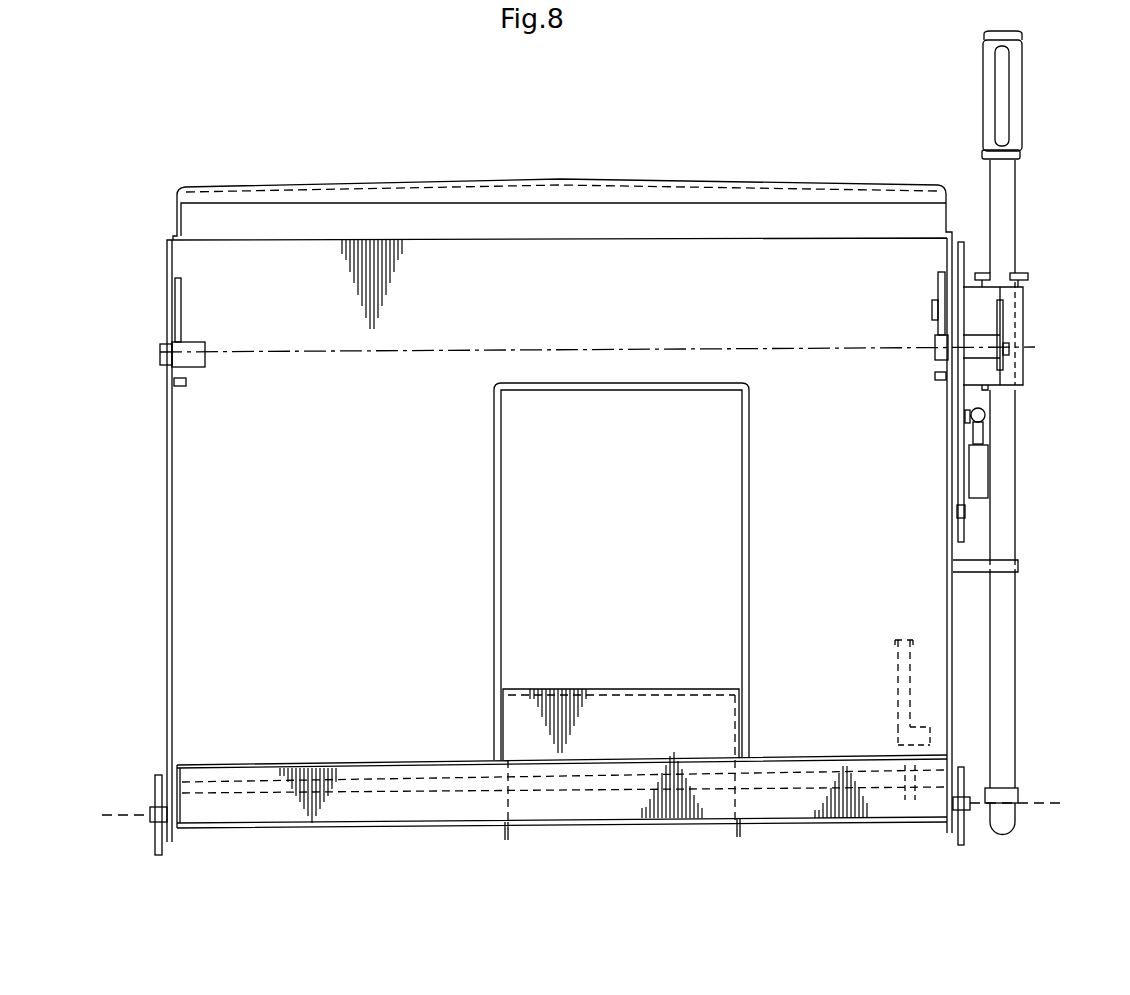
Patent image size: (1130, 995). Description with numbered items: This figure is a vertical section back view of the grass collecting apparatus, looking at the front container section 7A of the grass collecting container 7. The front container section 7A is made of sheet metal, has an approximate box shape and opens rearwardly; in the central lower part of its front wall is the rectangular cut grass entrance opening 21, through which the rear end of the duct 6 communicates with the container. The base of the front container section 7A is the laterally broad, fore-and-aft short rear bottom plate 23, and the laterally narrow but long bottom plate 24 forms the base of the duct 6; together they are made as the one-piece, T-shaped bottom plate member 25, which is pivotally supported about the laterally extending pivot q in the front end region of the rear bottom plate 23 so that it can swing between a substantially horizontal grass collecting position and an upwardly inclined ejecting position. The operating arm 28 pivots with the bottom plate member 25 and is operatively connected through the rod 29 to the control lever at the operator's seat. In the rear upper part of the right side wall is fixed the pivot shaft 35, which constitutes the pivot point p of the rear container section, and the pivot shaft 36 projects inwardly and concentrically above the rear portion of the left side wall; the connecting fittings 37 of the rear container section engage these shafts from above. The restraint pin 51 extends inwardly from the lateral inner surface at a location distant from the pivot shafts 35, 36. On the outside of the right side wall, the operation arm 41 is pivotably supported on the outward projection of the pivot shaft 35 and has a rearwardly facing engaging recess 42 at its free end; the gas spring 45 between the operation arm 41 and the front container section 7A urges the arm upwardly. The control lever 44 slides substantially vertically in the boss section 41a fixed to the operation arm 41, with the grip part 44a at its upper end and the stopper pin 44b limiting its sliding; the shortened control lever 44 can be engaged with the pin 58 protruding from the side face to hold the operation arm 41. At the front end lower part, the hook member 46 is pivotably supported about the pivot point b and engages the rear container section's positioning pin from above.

The duct 6 is at (494, 462).
The grass collecting container 7 is at (562, 148).
The front container section 7A is at (564, 178).
The cut grass entrance opening 21 is at (716, 545).
The rear bottom plate 23 is at (428, 783).
The bottom plate 24 is at (598, 716).
The bottom plate member 25 is at (688, 680).
The operating arm 28 is at (905, 746).
The rod 29 is at (898, 662).
The pivot shaft 35 is at (935, 357).
The pivot shaft 36 is at (200, 362).
The connecting fitting 37 is at (181, 296).
The operation arm 41 is at (964, 250).
The boss section 41a is at (1020, 306).
The engaging recess 42 is at (965, 512).
The control lever 44 is at (1005, 243).
The grip part 44a is at (1020, 92).
The stopper pin 44b is at (1010, 795).
The gas spring 45 is at (985, 466).
The hook member 46 is at (157, 790).
The restraint pin 51 is at (182, 386).
The pin 58 is at (1020, 567).
The pivot point p is at (485, 349).
The pivot q is at (778, 786).
The pivot point b is at (582, 811).